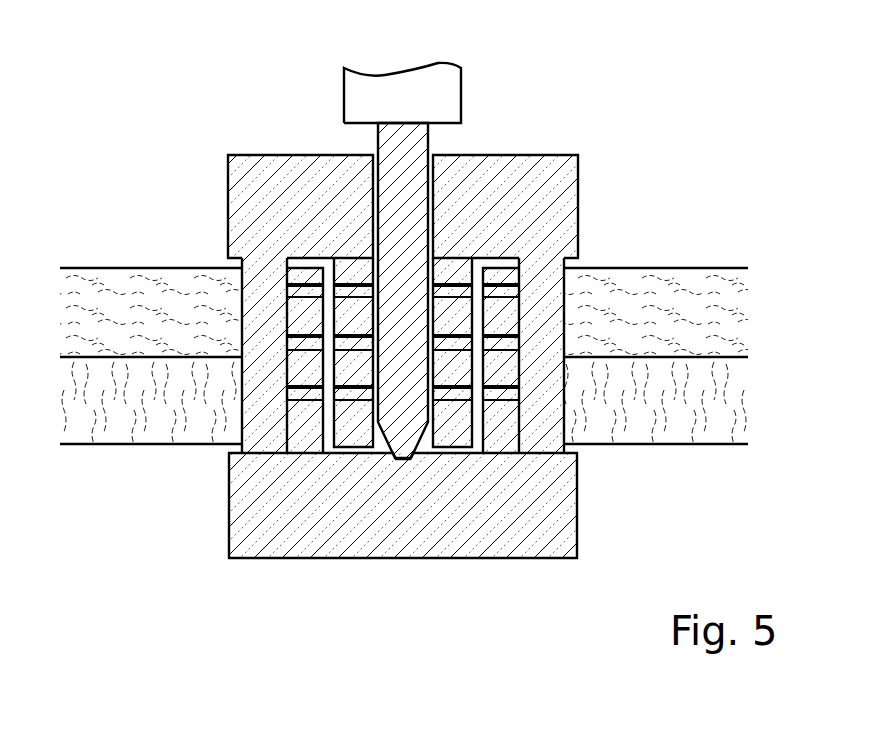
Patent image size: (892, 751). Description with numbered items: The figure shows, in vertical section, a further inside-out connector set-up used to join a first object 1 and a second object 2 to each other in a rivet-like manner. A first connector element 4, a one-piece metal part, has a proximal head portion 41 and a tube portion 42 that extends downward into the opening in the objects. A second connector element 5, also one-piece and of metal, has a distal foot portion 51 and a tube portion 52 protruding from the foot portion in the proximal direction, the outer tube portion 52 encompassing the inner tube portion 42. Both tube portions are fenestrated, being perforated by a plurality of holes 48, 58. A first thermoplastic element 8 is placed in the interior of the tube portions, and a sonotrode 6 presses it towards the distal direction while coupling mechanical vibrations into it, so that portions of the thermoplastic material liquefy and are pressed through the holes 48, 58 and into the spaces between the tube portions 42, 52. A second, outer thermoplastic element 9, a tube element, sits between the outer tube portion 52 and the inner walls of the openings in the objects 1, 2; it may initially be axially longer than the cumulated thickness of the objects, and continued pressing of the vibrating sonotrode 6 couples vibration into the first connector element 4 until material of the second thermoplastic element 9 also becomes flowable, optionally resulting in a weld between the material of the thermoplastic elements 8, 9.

The first object 1 is at (675, 315).
The second object 2 is at (677, 398).
The first connector element 4 is at (345, 146).
The head portion 41 is at (247, 210).
The tube portion 42 is at (440, 361).
The holes 48 is at (452, 290).
The second connector element 5 is at (460, 546).
The foot portion 51 is at (545, 511).
The tube portion 52 is at (443, 361).
The holes 58 is at (303, 340).
The sonotrode 6 is at (437, 90).
The first thermoplastic element 8 is at (472, 329).
The second thermoplastic element 9 is at (540, 303).